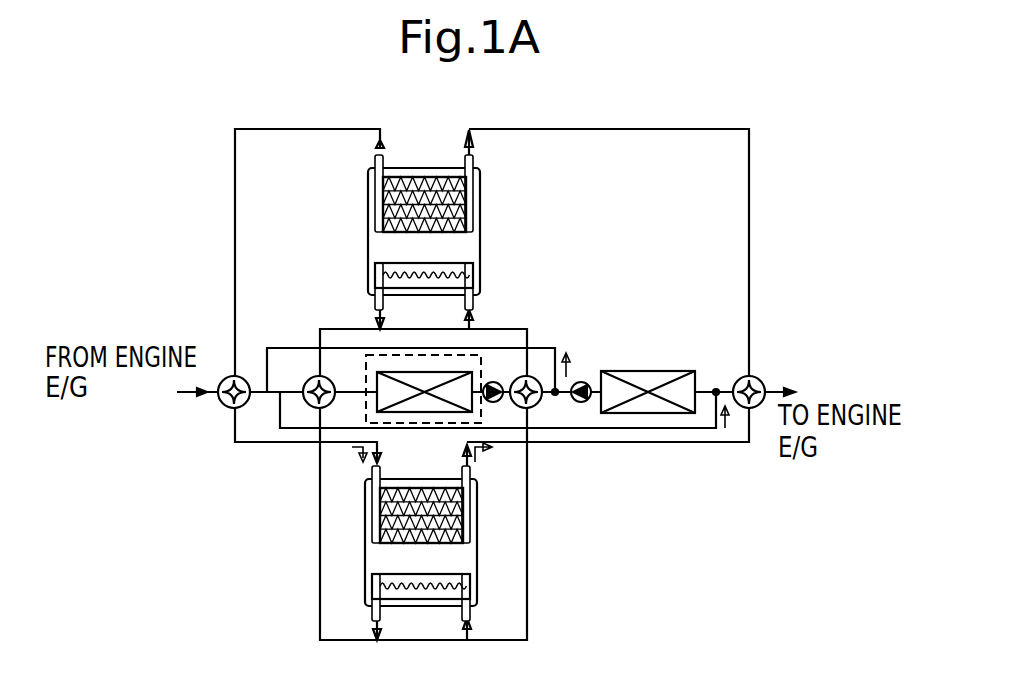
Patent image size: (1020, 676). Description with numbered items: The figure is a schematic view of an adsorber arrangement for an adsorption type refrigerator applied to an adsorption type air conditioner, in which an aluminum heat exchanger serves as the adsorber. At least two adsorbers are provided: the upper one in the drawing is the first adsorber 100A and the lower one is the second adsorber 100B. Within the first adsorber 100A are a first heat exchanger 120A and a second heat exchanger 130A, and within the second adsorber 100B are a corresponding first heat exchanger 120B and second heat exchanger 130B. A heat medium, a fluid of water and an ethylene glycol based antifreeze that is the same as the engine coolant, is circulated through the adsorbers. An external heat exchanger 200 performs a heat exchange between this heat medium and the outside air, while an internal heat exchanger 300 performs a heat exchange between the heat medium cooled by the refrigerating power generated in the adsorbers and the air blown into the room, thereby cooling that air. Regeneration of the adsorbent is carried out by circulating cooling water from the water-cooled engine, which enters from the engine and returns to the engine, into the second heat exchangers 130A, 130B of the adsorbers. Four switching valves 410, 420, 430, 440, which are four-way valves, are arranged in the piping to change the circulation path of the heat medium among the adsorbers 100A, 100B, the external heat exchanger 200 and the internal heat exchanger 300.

The first adsorber 100A is at (486, 223).
The second heat exchanger of the first adsorber 130A is at (467, 196).
The first heat exchanger of the first adsorber 120A is at (460, 265).
The second adsorber 100B is at (480, 543).
The second heat exchanger of the second adsorber 130B is at (486, 509).
The first heat exchanger of the second adsorber 120B is at (486, 573).
The switching valve 410 is at (231, 376).
The switching valve 430 is at (313, 376).
The switching valve 440 is at (536, 376).
The switching valve 420 is at (751, 376).
The internal heat exchanger 300 is at (426, 371).
The external heat exchanger 200 is at (649, 371).